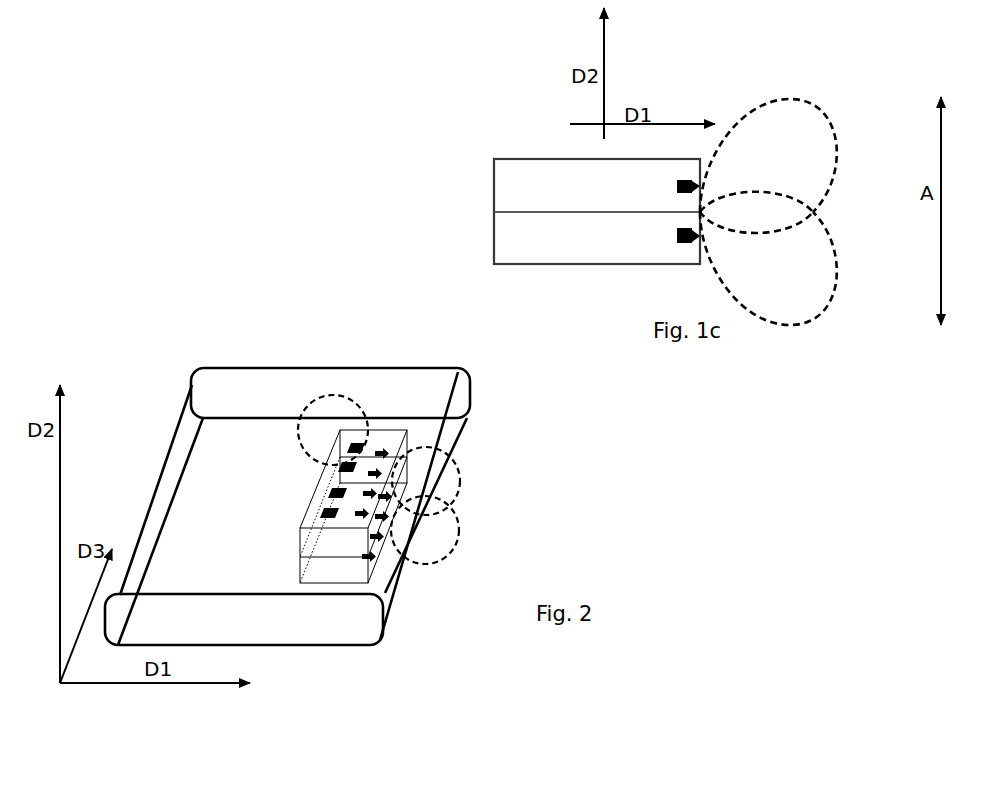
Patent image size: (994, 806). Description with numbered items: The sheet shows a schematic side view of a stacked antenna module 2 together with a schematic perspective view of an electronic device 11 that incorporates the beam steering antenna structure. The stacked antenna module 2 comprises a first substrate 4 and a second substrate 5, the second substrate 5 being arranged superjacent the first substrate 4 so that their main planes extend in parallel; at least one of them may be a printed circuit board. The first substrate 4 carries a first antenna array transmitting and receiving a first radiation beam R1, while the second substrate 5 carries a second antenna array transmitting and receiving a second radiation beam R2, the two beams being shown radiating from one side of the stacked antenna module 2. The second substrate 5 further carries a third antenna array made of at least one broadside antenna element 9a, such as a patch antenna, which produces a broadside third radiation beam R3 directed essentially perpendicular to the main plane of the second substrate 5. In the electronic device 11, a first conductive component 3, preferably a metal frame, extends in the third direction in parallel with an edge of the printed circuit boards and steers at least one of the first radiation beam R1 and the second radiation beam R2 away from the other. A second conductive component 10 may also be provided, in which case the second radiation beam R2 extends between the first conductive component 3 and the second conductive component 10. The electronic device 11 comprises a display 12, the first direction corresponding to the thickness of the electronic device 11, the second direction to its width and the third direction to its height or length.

In FIG. 1C, the stacked antenna module 2 is at (543, 122).
In FIG. 2, the stacked antenna module 2 is at (390, 437).
In FIG. 1C, the first substrate 4 is at (525, 242).
In FIG. 1C, the second substrate 5 is at (522, 182).
In FIG. 1C, the first radiation beam R1 is at (790, 262).
In FIG. 2, the first radiation beam R1 is at (443, 537).
In FIG. 1C, the second radiation beam R2 is at (792, 168).
In FIG. 2, the second radiation beam R2 is at (445, 480).
In FIG. 2, the third radiation beam R3 is at (333, 405).
In FIG. 2, the first conductive component 3 is at (385, 582).
In FIG. 2, the broadside antenna element 9a is at (313, 513).
In FIG. 2, the second conductive component 10 is at (217, 355).
In FIG. 2, the electronic device 11 is at (310, 322).
In FIG. 2, the display 12 is at (348, 655).